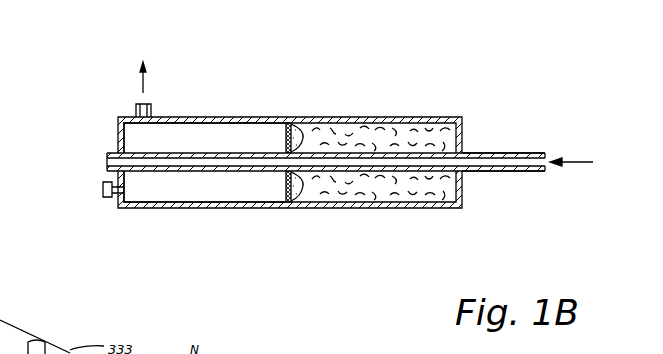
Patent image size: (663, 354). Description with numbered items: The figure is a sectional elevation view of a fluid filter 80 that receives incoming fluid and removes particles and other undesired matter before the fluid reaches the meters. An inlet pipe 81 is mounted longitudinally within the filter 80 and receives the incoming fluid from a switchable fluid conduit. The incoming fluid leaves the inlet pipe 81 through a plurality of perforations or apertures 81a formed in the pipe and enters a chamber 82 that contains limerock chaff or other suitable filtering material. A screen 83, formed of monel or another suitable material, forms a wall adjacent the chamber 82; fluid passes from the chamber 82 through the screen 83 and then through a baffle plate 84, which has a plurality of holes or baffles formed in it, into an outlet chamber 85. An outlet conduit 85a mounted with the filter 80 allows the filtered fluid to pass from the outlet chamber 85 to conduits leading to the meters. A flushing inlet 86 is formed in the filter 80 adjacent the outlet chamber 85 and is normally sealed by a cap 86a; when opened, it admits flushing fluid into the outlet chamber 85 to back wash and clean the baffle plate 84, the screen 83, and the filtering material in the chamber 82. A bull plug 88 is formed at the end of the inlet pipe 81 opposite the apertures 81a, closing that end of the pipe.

The fluid filter 80 is at (237, 120).
The inlet pipe 81 is at (512, 153).
The perforations or apertures 81a is at (363, 155).
The chamber 82 is at (370, 183).
The screen 83 is at (312, 126).
The baffle plate 84 is at (290, 184).
The outlet chamber 85 is at (198, 128).
The outlet conduit 85a is at (134, 110).
The flushing inlet 86 is at (117, 200).
The cap 86a is at (102, 190).
The bull plug 88 is at (106, 157).